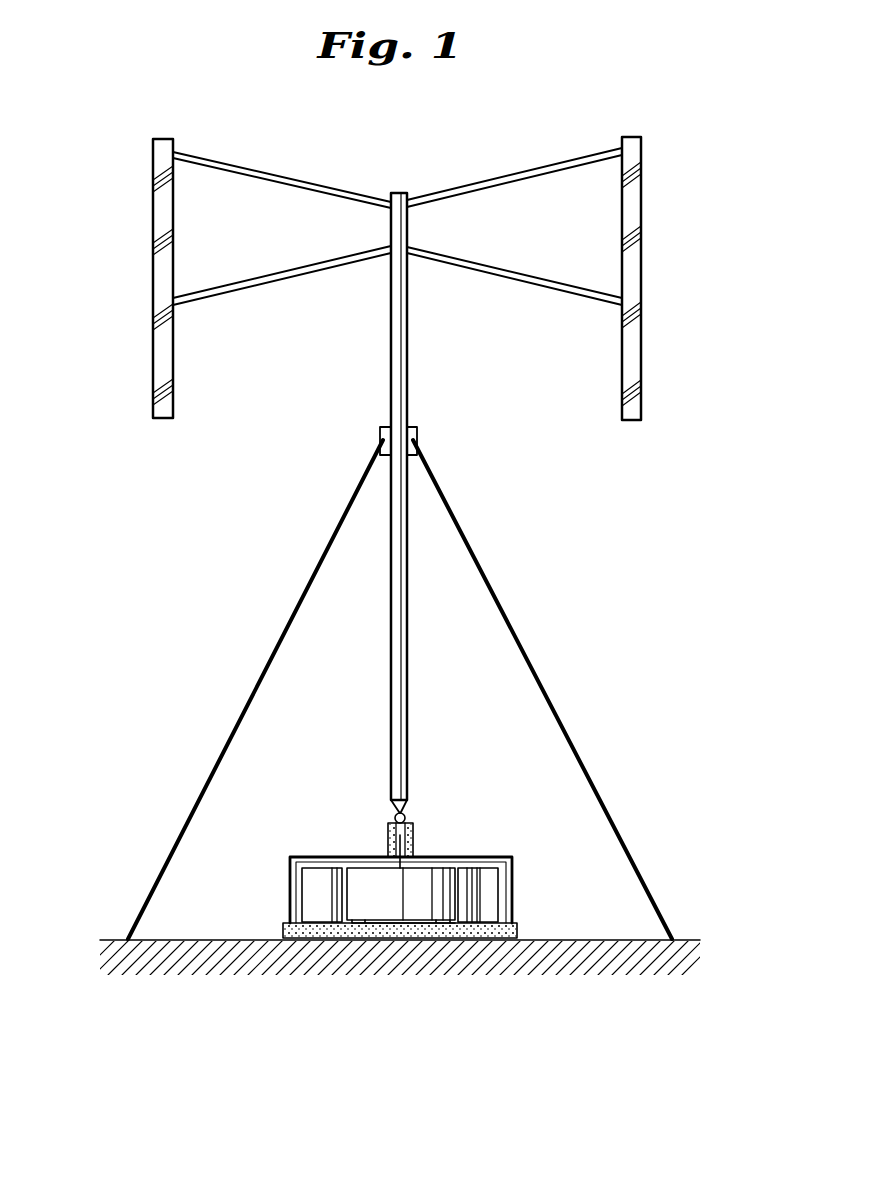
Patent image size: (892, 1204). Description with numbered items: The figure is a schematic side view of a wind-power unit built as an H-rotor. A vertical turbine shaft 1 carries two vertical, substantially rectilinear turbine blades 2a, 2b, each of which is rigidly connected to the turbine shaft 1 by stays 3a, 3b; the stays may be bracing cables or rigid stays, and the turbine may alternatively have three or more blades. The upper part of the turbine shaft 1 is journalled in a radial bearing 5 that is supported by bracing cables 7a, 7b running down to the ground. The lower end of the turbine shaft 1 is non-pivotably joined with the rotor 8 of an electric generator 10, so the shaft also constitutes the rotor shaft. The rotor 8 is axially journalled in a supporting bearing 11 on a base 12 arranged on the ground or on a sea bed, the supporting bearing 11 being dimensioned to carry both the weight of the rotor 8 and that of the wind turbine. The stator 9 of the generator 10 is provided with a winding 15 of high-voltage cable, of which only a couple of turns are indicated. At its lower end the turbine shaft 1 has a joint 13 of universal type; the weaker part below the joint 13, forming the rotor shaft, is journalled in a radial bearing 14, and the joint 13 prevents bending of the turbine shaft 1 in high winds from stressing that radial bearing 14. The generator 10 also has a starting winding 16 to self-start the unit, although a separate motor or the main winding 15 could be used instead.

The turbine shaft 1 is at (398, 377).
The turbine blade 2a is at (167, 357).
The turbine blade 2b is at (633, 356).
The stay 3a is at (285, 178).
The stay 3b is at (513, 173).
The radial bearing 5 is at (388, 432).
The bracing cable 7a is at (300, 590).
The bracing cable 7b is at (485, 570).
The rotor 8 is at (435, 880).
The stator 9 is at (487, 877).
The electric generator 10 is at (477, 836).
The supporting bearing 11 is at (440, 925).
The base 12 is at (315, 933).
The joint 13 is at (395, 818).
The radial bearing 14 is at (388, 842).
The winding 15 is at (475, 902).
The starting winding 16 is at (330, 892).